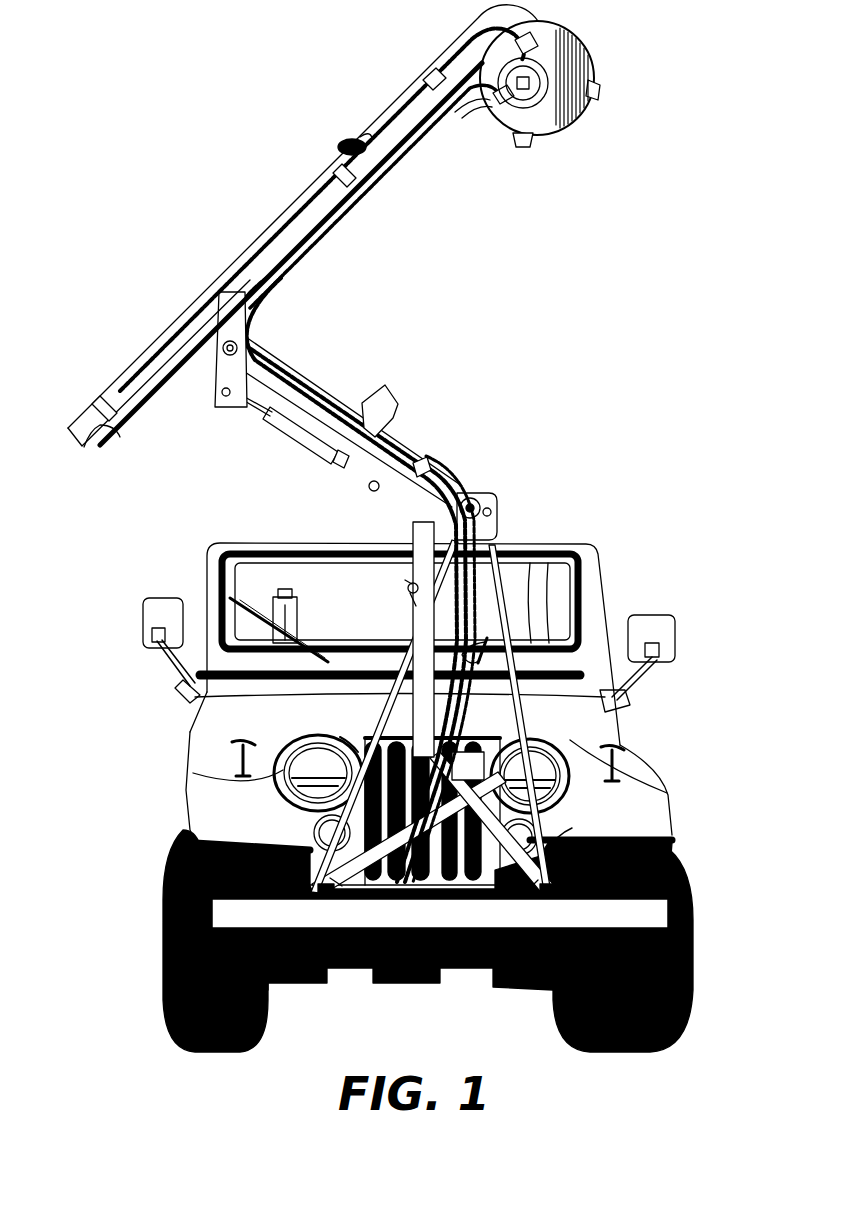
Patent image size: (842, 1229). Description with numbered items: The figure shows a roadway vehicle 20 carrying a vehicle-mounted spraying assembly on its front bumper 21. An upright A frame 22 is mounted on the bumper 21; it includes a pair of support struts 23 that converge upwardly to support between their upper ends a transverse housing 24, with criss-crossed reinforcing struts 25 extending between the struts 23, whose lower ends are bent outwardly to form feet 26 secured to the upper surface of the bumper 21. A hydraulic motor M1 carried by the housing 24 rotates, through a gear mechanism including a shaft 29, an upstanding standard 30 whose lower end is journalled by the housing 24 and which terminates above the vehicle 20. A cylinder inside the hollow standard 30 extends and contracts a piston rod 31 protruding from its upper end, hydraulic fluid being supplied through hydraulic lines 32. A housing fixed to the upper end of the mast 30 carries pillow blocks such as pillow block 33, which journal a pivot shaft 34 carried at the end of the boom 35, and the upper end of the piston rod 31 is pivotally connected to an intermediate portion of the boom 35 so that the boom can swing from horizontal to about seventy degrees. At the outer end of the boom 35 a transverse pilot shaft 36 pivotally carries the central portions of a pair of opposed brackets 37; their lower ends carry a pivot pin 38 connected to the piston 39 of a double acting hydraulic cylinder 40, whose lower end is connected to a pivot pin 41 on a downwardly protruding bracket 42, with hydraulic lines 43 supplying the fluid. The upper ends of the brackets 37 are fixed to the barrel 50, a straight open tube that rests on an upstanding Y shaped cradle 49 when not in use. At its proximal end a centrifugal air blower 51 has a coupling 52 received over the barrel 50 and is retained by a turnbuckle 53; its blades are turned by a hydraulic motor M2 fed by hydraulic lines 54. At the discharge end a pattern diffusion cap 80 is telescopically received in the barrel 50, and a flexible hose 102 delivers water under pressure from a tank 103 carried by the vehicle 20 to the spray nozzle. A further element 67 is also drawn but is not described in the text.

The roadway vehicle 20 is at (418, 797).
The front bumper 21 is at (418, 926).
The A frame 22 is at (571, 830).
The support struts 23 is at (322, 894).
The transverse housing 24 is at (456, 779).
The reinforcing struts 25 is at (350, 877).
The feet 26 is at (308, 893).
The shaft 29 is at (340, 737).
The upstanding standard 30 is at (410, 587).
The piston rod 31 is at (416, 527).
The hydraulic lines 32 is at (500, 535).
The pillow block 33 is at (499, 501).
The pivot shaft 34 is at (484, 491).
The boom 35 is at (397, 443).
The pilot shaft 36 is at (223, 367).
The brackets 37 is at (240, 343).
The pivot pin 38 is at (227, 397).
The piston 39 is at (268, 418).
The double acting hydraulic cylinder 40 is at (303, 447).
The pivot pin 41 is at (372, 490).
The bracket 42 is at (388, 484).
The hydraulic lines 43 is at (345, 473).
The Y shaped cradle 49 is at (372, 412).
The barrel 50 is at (284, 228).
The centrifugal air blower 51 is at (507, 140).
The coupling 52 is at (457, 113).
The turnbuckle 53 is at (410, 87).
The hydraulic lines 54 is at (333, 183).
The fitting 67 is at (348, 138).
The pattern diffusion cap 80 is at (100, 398).
The flexible hose 102 is at (137, 413).
The tank 103 is at (347, 617).
The hydraulic motor M1 is at (318, 773).
The hydraulic motor M2 is at (532, 116).